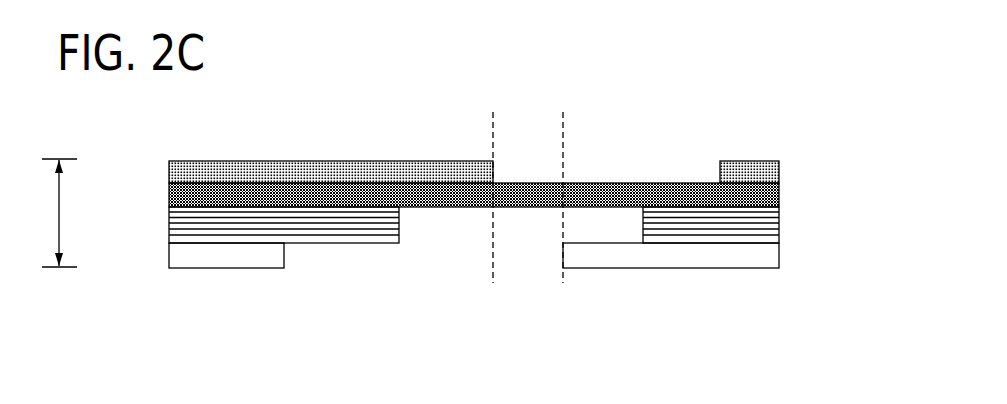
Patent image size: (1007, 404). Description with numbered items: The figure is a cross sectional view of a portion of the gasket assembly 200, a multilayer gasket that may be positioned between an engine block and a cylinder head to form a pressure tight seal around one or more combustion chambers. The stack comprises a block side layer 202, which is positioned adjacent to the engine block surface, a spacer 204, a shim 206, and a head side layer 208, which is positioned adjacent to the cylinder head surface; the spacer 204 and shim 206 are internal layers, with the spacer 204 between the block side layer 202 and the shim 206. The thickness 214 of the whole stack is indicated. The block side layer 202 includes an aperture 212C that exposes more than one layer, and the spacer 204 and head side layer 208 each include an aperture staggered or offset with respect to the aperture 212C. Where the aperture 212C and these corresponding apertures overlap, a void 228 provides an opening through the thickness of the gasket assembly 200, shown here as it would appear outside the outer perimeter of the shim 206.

The gasket assembly 200 is at (628, 51).
The block side layer 202 is at (160, 252).
The spacer 204 is at (160, 226).
The shim 206 is at (790, 198).
The head side layer 208 is at (790, 173).
The aperture 212C is at (424, 307).
The thickness 214 is at (61, 195).
The void 228 is at (525, 110).